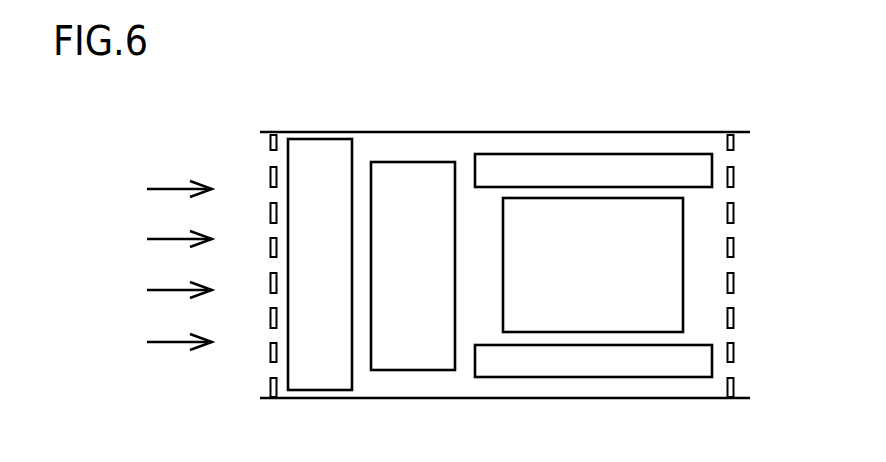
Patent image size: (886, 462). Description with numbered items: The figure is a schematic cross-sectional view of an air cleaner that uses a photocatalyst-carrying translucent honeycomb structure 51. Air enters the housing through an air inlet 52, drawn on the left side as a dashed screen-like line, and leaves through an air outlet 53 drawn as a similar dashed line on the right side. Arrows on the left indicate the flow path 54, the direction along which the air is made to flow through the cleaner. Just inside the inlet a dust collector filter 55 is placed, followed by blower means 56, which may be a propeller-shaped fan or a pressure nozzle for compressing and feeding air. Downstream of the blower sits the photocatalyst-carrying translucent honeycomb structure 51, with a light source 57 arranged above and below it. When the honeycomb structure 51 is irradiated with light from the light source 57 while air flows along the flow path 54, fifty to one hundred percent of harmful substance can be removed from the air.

The photocatalyst-carrying translucent honeycomb structure 51 is at (613, 208).
The air inlet 52 is at (270, 318).
The air outlet 53 is at (735, 177).
The flow path 54 is at (164, 343).
The dust collector filter 55 is at (319, 160).
The blower means 56 is at (411, 178).
The light source 57 is at (531, 165).